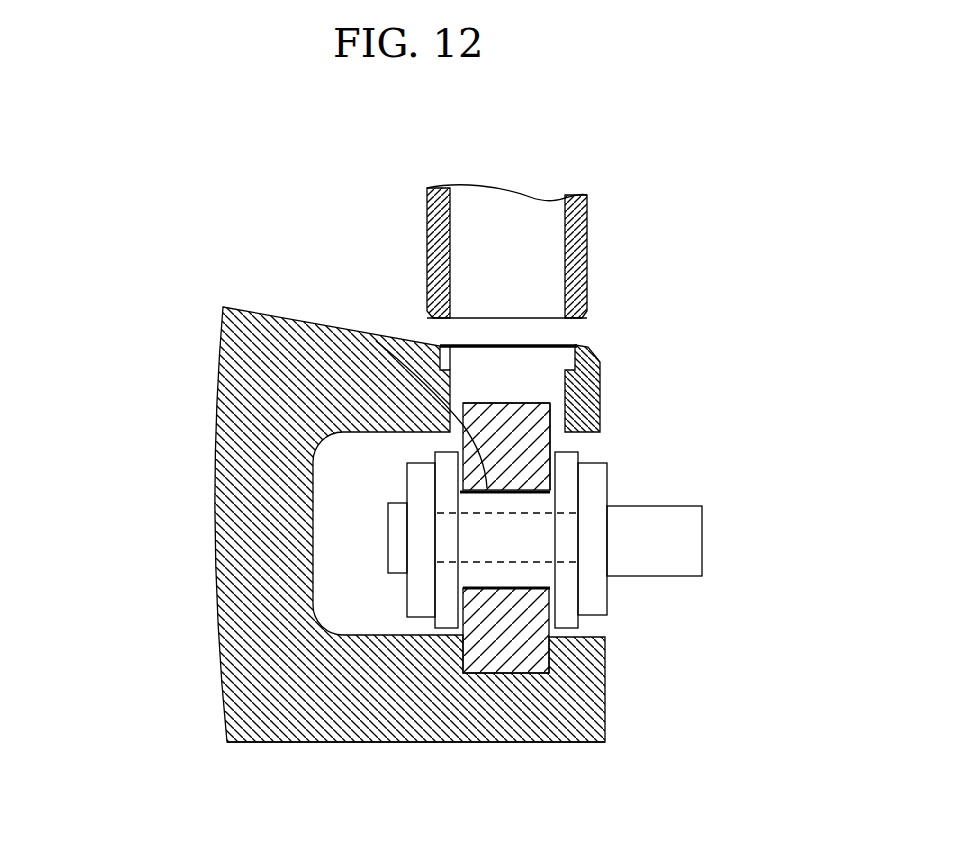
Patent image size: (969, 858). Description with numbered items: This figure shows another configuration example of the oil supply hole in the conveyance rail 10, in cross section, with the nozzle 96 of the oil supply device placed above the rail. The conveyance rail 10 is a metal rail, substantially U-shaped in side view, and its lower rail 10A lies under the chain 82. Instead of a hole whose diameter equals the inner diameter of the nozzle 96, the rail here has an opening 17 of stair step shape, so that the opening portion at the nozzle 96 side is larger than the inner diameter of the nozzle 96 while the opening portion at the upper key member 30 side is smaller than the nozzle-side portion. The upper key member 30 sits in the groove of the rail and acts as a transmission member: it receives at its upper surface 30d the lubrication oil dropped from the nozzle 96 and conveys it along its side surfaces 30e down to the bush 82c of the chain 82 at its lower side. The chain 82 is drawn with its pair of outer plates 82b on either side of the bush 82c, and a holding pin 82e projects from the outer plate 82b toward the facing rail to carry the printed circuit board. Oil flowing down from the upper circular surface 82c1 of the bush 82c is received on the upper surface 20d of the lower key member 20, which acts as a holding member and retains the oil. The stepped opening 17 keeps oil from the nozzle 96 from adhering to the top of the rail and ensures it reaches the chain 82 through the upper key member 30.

The conveyance rail 10 is at (217, 390).
The lower rail 10A is at (448, 737).
The lower key member 20 is at (513, 675).
The upper surface of lower key member 20d is at (490, 587).
The opening 17 is at (568, 347).
The upper key member 30 is at (733, 383).
The upper surface of upper key member 30d is at (530, 403).
The side surface of upper key member 30e is at (552, 440).
The chain 82 is at (797, 530).
The outer plate 82b is at (603, 587).
The bush 82c is at (540, 580).
The upper circular surface of bush 82c1 is at (376, 341).
The holding pin 82e is at (697, 545).
The nozzle 96 is at (587, 248).